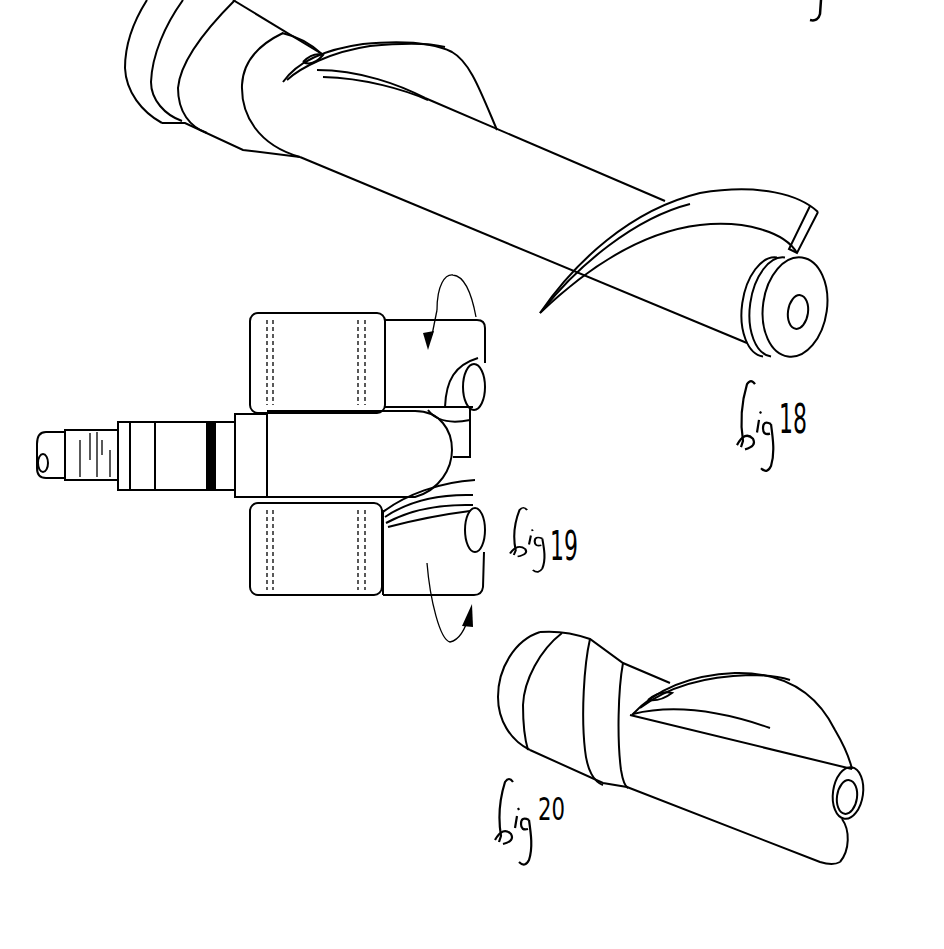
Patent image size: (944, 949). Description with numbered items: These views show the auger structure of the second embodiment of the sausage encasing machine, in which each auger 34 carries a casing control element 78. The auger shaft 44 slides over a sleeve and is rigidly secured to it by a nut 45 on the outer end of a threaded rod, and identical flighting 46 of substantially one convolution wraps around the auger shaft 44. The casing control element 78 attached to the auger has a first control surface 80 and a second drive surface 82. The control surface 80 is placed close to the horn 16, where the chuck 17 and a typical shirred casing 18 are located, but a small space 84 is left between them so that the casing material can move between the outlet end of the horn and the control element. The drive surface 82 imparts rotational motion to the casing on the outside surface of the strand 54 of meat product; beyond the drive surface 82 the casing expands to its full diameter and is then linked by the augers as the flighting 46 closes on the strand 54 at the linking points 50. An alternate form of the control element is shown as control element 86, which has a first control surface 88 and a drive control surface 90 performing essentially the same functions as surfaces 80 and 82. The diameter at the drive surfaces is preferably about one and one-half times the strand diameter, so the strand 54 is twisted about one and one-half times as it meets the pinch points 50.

In FIG. 19, the horn 16 is at (43, 431).
In FIG. 19, the chuck 17 is at (167, 430).
In FIG. 19, the shirred casing 18 is at (92, 429).
In FIG. 19, the auger 34 is at (491, 390).
In FIG. 18, the auger shaft 44 is at (538, 150).
In FIG. 19, the auger shaft 44 is at (477, 382).
In FIG. 20, the auger shaft 44 is at (797, 760).
In FIG. 18, the nut 45 is at (755, 342).
In FIG. 18, the flighting 46 is at (693, 203).
In FIG. 19, the flighting 46 is at (473, 362).
In FIG. 20, the flighting 46 is at (800, 718).
In FIG. 19, the linking point 50 is at (470, 443).
In FIG. 19, the strand of meat product 54 is at (423, 465).
In FIG. 18, the casing control element 78 is at (156, 122).
In FIG. 18, the first control surface 80 is at (157, 97).
In FIG. 18, the second drive surface 82 is at (229, 126).
In FIG. 19, the small space 84 is at (265, 409).
In FIG. 19, the control element 86 is at (279, 309).
In FIG. 20, the control element 86 is at (596, 633).
In FIG. 19, the first control surface 88 is at (260, 320).
In FIG. 20, the first control surface 88 is at (548, 632).
In FIG. 19, the drive control surface 90 is at (314, 322).
In FIG. 20, the drive control surface 90 is at (607, 658).